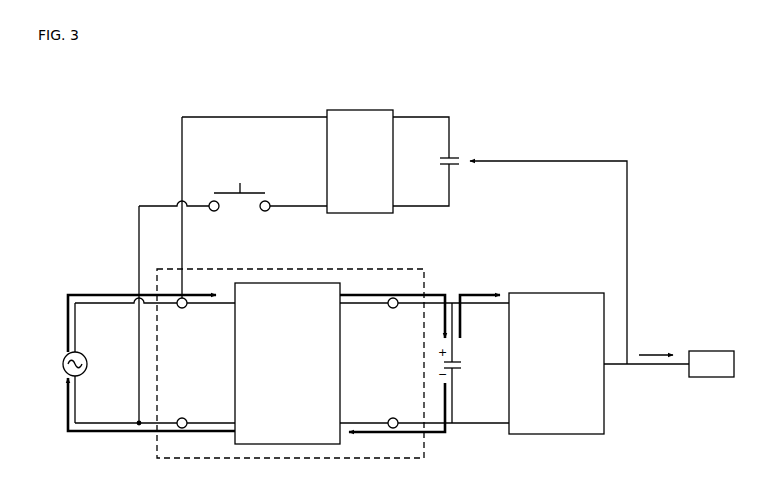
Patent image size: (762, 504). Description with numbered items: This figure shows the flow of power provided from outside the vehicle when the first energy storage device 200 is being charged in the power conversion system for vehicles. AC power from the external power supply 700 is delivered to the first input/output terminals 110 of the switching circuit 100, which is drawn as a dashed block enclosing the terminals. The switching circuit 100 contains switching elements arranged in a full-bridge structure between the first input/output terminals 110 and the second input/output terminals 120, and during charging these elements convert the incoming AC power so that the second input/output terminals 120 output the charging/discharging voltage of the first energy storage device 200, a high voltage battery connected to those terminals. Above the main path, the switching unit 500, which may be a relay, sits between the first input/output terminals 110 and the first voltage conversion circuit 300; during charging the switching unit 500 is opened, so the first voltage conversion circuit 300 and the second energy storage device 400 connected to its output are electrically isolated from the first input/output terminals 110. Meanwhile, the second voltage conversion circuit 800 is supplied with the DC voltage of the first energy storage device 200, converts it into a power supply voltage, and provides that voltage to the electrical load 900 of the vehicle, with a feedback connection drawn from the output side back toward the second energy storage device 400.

The switching circuit 100 is at (290, 459).
The first input/output terminals 110 is at (182, 309).
The second input/output terminals 120 is at (393, 309).
The first energy storage device 200 is at (460, 360).
The first voltage conversion circuit 300 is at (360, 161).
The second energy storage device 400 is at (455, 157).
The switching unit 500 is at (246, 190).
The power supply 700 is at (62, 363).
The second voltage conversion circuit 800 is at (556, 363).
The electrical load 900 is at (711, 364).